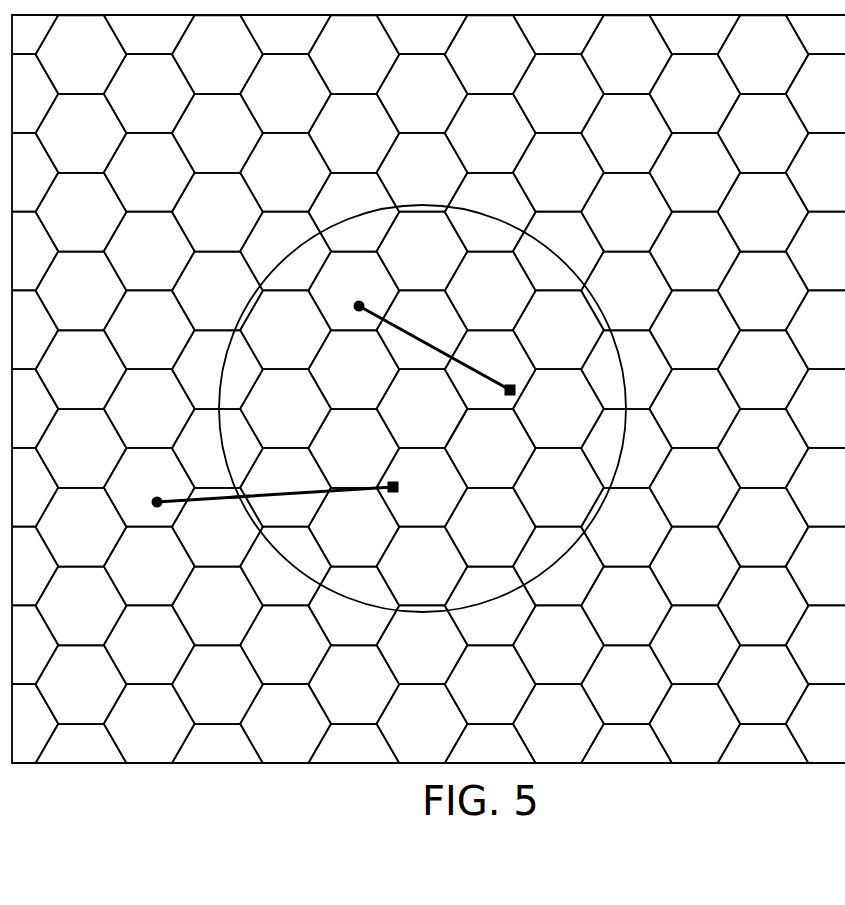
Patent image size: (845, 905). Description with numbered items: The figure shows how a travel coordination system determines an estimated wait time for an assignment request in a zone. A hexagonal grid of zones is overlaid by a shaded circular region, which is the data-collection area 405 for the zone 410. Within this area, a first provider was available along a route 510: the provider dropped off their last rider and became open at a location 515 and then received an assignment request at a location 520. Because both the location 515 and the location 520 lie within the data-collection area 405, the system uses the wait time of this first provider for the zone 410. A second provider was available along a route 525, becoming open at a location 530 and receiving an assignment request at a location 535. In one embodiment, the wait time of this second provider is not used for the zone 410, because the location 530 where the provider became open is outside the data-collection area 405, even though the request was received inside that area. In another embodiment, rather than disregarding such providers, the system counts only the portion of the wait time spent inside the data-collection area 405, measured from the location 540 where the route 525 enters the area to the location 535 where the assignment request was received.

The data-collection area 405 is at (304, 234).
The zone 410 is at (462, 422).
The route 510 is at (442, 346).
The location 515 is at (373, 294).
The location 520 is at (517, 374).
The route 525 is at (299, 485).
The location 530 is at (152, 486).
The location 535 is at (405, 479).
The location 540 is at (235, 505).